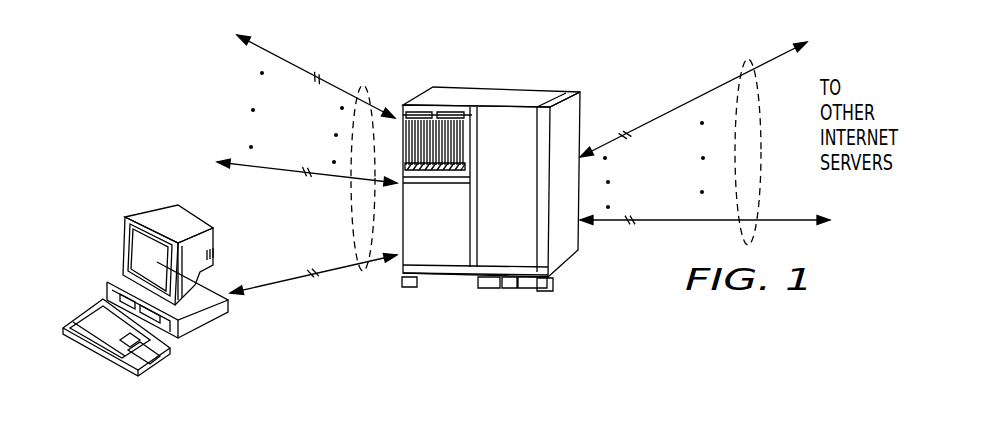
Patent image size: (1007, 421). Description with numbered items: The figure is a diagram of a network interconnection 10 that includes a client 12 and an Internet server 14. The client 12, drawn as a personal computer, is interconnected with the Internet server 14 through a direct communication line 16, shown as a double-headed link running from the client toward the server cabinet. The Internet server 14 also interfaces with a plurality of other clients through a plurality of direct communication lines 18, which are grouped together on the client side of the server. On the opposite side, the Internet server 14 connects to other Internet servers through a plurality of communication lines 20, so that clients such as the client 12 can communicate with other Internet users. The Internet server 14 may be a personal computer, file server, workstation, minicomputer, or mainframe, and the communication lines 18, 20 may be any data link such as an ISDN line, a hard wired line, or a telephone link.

The network interconnection 10 is at (150, 66).
The client 12 is at (155, 216).
The Internet server 14 is at (497, 95).
The direct communication line 16 is at (288, 282).
The direct communication lines 18 is at (363, 84).
The communication lines 20 is at (750, 57).